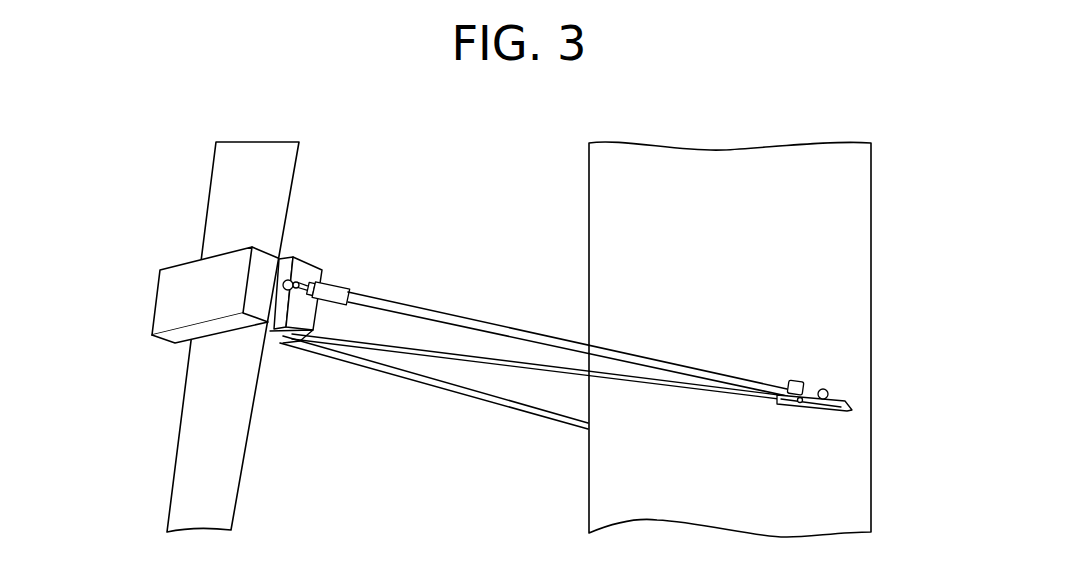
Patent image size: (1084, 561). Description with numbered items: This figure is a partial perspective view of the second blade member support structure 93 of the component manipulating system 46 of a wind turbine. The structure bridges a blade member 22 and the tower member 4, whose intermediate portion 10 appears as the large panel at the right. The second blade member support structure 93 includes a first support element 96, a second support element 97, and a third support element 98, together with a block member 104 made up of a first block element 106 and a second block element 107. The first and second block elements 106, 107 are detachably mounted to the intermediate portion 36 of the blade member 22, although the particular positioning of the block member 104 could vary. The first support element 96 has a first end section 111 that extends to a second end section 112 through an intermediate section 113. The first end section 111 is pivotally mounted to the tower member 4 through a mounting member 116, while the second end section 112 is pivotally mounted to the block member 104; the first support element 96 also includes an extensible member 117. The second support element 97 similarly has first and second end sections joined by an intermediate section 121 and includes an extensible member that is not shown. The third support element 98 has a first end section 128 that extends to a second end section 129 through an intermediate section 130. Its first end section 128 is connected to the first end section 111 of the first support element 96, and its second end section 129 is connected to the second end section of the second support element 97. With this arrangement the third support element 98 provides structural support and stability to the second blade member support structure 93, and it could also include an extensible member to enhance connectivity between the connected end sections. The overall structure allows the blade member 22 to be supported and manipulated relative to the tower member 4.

The tower member 4 is at (880, 195).
The intermediate portion 10 is at (733, 158).
The blade member 22 is at (170, 389).
The intermediate portion 36 is at (247, 150).
The component manipulating system 46 is at (511, 220).
The second blade member support structure 93 is at (422, 424).
The first support element 96 is at (462, 306).
The second support element 97 is at (460, 410).
The third support element 98 is at (466, 365).
The block member 104 is at (148, 258).
The first block element 106 is at (140, 302).
The second block element 107 is at (318, 320).
The first end section 111 is at (823, 389).
The second end section 112 is at (294, 279).
The intermediate section 113 is at (567, 339).
The mounting member 116 is at (807, 417).
The extensible member 117 is at (334, 283).
The intermediate section 121 is at (492, 402).
The first end section 128 is at (778, 402).
The second end section 129 is at (303, 340).
The intermediate section 130 is at (518, 362).